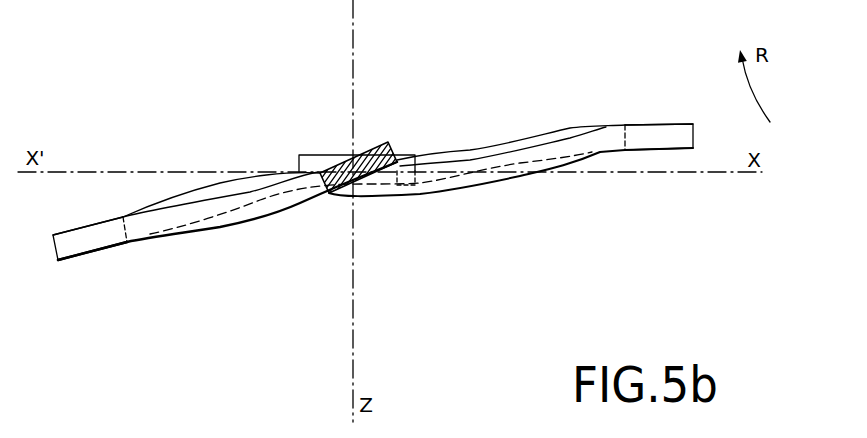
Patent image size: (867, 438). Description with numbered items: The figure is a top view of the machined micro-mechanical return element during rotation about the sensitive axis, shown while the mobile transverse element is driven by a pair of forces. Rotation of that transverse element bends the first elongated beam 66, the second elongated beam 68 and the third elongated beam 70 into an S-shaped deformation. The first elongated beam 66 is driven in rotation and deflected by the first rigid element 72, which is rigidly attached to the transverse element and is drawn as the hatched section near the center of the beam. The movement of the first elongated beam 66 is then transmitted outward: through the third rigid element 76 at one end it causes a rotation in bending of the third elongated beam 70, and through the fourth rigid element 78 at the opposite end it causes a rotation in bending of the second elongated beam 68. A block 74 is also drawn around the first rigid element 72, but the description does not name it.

The first elongated beam 66 is at (221, 222).
The second elongated beam 68 is at (473, 150).
The third elongated beam 70 is at (233, 194).
The first rigid element 72 is at (372, 145).
The holder block 74 is at (333, 162).
The third rigid element 76 is at (85, 243).
The fourth rigid element 78 is at (662, 138).